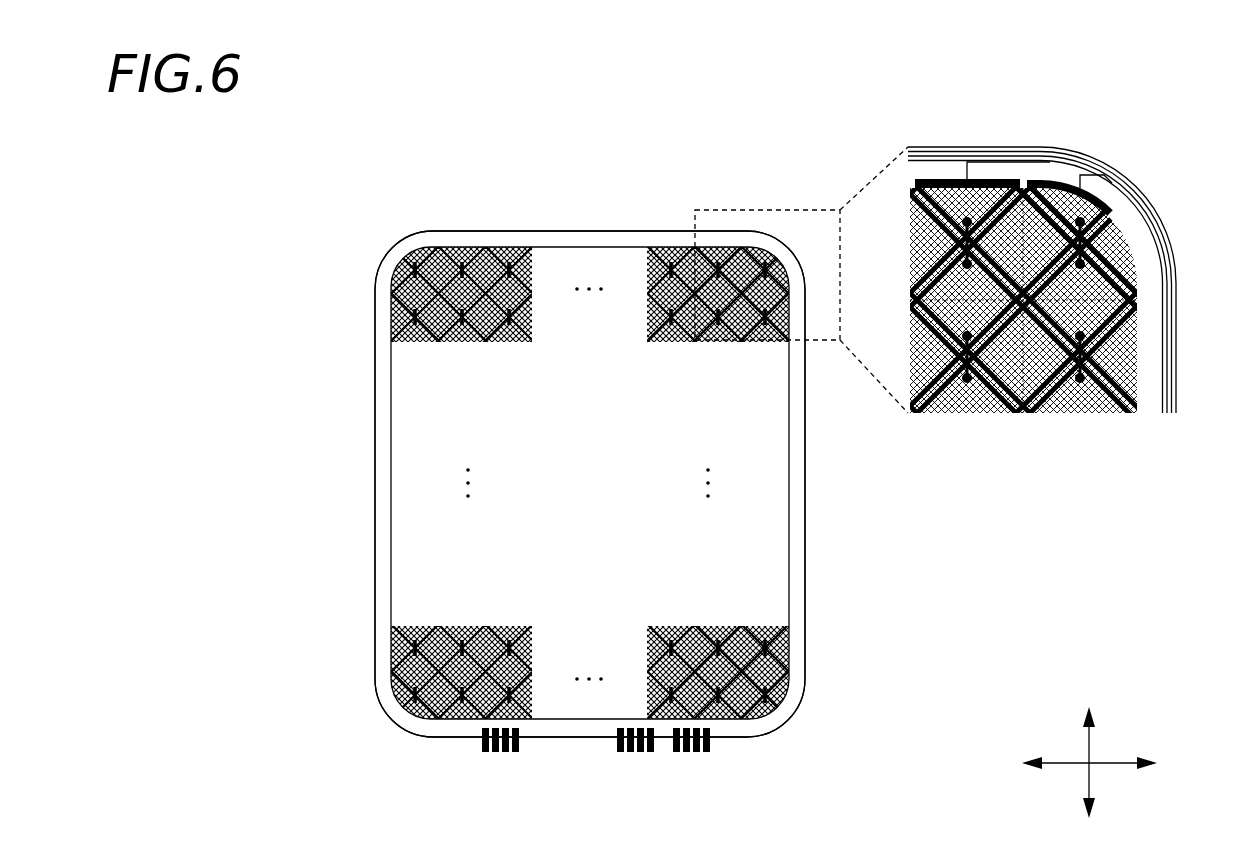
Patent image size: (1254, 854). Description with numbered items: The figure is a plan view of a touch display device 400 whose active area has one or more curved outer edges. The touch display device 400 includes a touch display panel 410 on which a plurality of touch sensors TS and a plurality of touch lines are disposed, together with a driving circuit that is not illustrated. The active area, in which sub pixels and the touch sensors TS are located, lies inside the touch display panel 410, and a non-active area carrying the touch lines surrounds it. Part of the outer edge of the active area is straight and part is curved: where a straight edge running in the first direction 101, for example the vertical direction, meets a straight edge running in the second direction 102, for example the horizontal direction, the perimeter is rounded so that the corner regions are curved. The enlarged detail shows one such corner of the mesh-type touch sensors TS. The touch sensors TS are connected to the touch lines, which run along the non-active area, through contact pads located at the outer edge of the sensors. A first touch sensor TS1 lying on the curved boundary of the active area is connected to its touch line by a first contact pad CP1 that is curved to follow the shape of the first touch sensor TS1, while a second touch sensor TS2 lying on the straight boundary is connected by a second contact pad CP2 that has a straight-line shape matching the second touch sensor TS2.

The touch display device 400 is at (336, 157).
The touch display panel 410 is at (512, 232).
The touch sensor TS is at (665, 258).
The second touch sensor TS2 is at (944, 188).
The second contact pad CP2 is at (950, 188).
The first touch sensor TS1 is at (1046, 186).
The first contact pad CP1 is at (1100, 204).
The first direction 101 is at (1125, 763).
The second direction 102 is at (1088, 741).